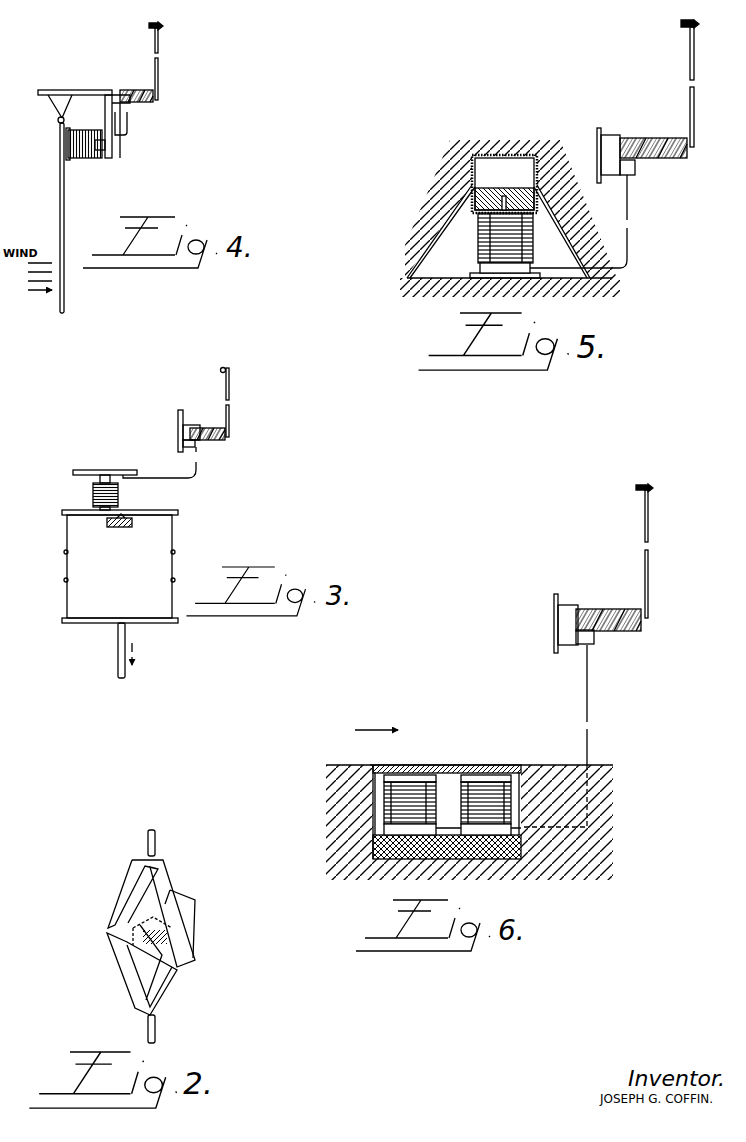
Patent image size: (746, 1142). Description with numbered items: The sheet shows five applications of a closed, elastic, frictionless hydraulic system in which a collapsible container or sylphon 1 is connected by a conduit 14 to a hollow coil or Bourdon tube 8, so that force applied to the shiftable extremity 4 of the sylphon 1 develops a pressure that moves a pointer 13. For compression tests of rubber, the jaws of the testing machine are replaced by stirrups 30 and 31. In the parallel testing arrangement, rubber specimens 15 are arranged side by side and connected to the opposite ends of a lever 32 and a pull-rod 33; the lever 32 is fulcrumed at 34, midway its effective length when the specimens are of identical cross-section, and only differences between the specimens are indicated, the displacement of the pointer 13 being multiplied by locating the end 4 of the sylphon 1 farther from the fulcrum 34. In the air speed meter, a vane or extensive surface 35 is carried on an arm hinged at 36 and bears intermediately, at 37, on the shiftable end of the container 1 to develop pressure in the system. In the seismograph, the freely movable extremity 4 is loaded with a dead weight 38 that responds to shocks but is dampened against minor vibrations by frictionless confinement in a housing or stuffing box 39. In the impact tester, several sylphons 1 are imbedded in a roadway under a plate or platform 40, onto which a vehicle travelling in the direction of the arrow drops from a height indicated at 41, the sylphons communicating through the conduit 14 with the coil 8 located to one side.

In FIG. 4, the container or sylphon 1 is at (88, 158).
In FIG. 5, the container or sylphon 1 is at (487, 245).
In FIG. 3, the container or sylphon 1 is at (116, 493).
In FIG. 6, the container or sylphon 1 is at (392, 800).
In FIG. 5, the extremity of the sylphon 4 is at (488, 212).
In FIG. 3, the extremity of the sylphon 4 is at (93, 508).
In FIG. 4, the Bourdon tube 8 is at (147, 88).
In FIG. 5, the Bourdon tube 8 is at (667, 139).
In FIG. 3, the Bourdon tube 8 is at (215, 428).
In FIG. 6, the Bourdon tube 8 is at (614, 612).
In FIG. 3, the pointer 13 is at (229, 371).
In FIG. 4, the conduit 14 is at (128, 130).
In FIG. 5, the conduit 14 is at (632, 256).
In FIG. 3, the conduit 14 is at (199, 458).
In FIG. 6, the conduit 14 is at (590, 711).
In FIG. 3, the rubber specimens 15 is at (172, 566).
In FIG. 2, the stirrup 30 is at (126, 882).
In FIG. 2, the stirrup 31 is at (122, 968).
In FIG. 3, the lever 32 is at (172, 510).
In FIG. 3, the pull-rod 33 is at (118, 650).
In FIG. 3, the fulcrum 34 is at (107, 522).
In FIG. 4, the vane 35 is at (60, 228).
In FIG. 4, the hinge 36 is at (58, 120).
In FIG. 4, the intermediate point of the arm 37 is at (67, 146).
In FIG. 5, the dead weight 38 is at (478, 197).
In FIG. 5, the housing or stuffing box 39 is at (508, 152).
In FIG. 6, the plate or platform 40 is at (470, 765).
In FIG. 6, the drop height indication 41 is at (368, 763).